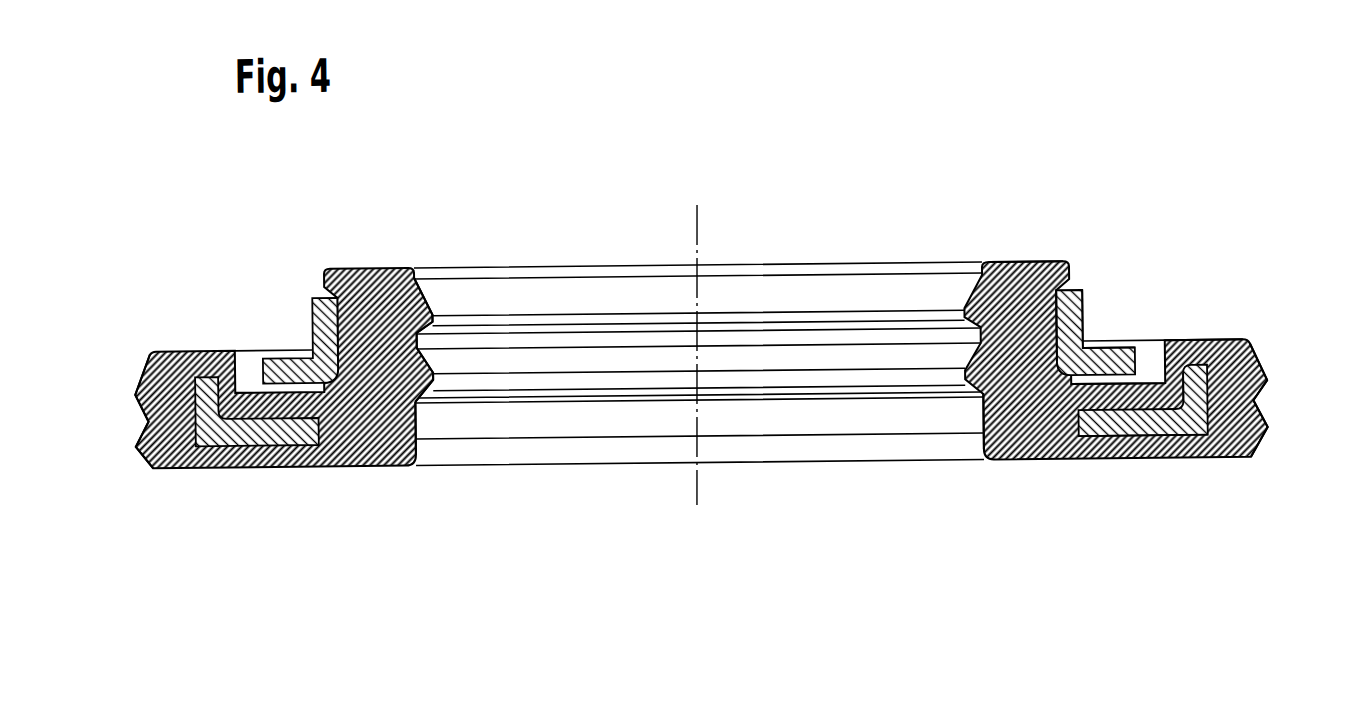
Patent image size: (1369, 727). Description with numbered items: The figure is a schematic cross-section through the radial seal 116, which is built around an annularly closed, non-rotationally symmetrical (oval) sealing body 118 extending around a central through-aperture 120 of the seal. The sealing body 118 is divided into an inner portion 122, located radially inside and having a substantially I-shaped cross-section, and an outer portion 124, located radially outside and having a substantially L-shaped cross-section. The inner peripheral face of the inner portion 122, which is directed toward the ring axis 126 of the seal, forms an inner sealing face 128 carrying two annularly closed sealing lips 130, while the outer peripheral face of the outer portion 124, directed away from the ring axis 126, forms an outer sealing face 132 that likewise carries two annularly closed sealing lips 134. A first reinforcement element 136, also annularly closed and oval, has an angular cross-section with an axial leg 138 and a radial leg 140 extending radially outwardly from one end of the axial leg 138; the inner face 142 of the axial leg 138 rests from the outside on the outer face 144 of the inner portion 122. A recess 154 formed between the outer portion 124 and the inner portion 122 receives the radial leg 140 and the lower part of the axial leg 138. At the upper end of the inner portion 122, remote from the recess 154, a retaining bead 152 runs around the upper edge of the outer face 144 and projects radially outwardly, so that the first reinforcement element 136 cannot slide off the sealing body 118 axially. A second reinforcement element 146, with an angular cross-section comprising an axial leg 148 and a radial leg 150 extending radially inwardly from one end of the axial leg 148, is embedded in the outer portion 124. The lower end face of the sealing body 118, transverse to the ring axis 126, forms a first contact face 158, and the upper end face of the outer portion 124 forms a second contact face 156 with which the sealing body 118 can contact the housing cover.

The radial seal 116 is at (142, 326).
The sealing body 118 is at (1004, 290).
The central through-aperture 120 is at (845, 306).
The inner portion 122 is at (1012, 413).
The outer portion 124 is at (1237, 441).
The ring axis 126 is at (702, 215).
The inner sealing face 128 is at (417, 416).
The sealing lips 130 is at (434, 374).
The outer sealing face 132 is at (1268, 418).
The sealing lips 134 is at (135, 441).
The first reinforcement element 136 is at (1088, 329).
The axial leg 138 is at (1088, 342).
The radial leg 140 is at (1080, 464).
The inner face 142 is at (1040, 303).
The outer face 144 is at (1089, 317).
The second reinforcement element 146 is at (1149, 433).
The axial leg 148 is at (1268, 381).
The radial leg 150 is at (1107, 441).
The retaining bead 152 is at (1073, 317).
The recess 154 is at (1184, 427).
The second contact face 156 is at (194, 342).
The first contact face 158 is at (186, 464).